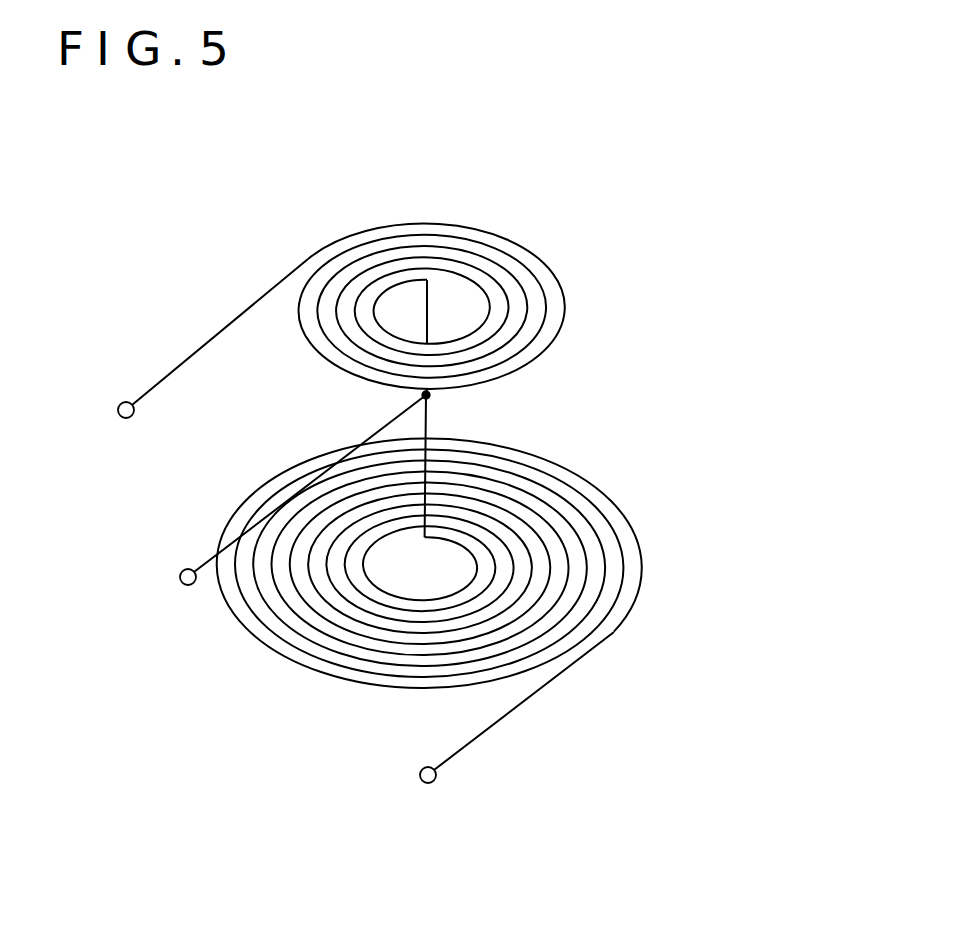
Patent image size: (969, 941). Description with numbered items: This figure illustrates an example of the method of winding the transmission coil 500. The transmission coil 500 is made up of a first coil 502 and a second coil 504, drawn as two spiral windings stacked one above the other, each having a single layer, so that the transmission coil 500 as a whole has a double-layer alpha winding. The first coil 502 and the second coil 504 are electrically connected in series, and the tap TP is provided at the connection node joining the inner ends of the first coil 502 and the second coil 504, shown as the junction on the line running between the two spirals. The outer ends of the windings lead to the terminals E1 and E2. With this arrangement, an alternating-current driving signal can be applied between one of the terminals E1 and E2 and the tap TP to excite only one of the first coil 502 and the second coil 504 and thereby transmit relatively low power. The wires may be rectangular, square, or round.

The transmission coil 500 is at (686, 180).
The first coil 502 is at (658, 522).
The second coil 504 is at (563, 263).
The terminal E1 is at (423, 786).
The terminal E2 is at (123, 419).
The tap TP is at (173, 586).